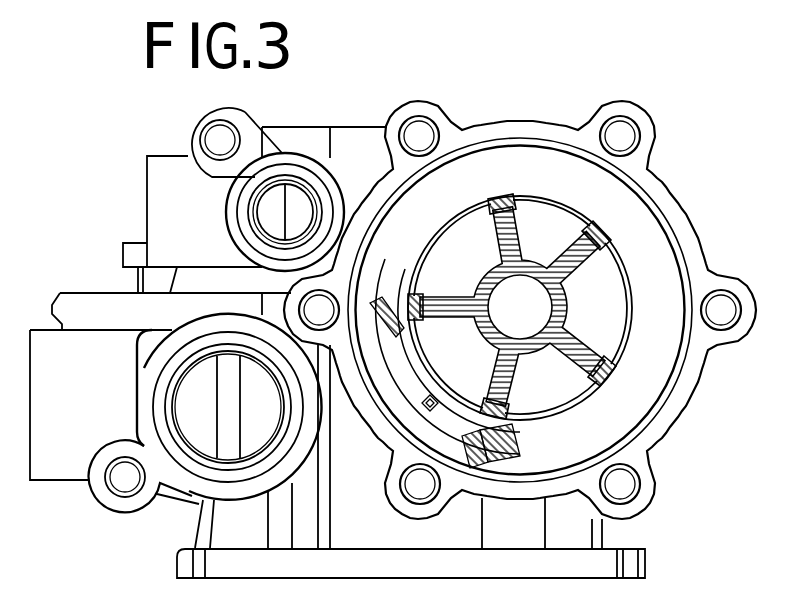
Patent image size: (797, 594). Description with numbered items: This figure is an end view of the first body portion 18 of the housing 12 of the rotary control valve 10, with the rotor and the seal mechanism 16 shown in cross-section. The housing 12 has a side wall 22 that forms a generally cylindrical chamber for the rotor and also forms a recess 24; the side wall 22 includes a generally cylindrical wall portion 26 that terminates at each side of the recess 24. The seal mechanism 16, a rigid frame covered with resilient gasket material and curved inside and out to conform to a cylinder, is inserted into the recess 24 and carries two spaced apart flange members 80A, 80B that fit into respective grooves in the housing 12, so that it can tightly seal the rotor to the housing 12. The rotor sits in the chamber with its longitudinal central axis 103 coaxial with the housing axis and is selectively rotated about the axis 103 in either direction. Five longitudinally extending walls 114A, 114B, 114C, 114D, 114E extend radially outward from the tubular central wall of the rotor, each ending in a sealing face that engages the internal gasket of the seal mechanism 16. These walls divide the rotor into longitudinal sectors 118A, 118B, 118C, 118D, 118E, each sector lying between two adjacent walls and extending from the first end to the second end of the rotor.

The rotary control valve 10 is at (515, 98).
The housing 12 is at (659, 172).
The first body portion 18 is at (689, 226).
The side wall 22 is at (611, 286).
The cylindrical wall portion 26 is at (620, 277).
The longitudinal central axis 103 is at (512, 301).
The longitudinally extending wall 114A is at (516, 400).
The longitudinally extending wall 114B is at (428, 294).
The longitudinally extending wall 114C is at (502, 210).
The longitudinally extending wall 114D is at (590, 234).
The longitudinally extending wall 114E is at (608, 352).
The longitudinal sector 118A is at (448, 363).
The longitudinal sector 118B is at (452, 250).
The longitudinal sector 118C is at (551, 225).
The longitudinal sector 118D is at (604, 303).
The longitudinal sector 118E is at (551, 396).
The flange member 80A is at (380, 298).
The flange member 80B is at (510, 452).
The seal mechanism 16 is at (499, 448).
The recess 24 is at (463, 450).